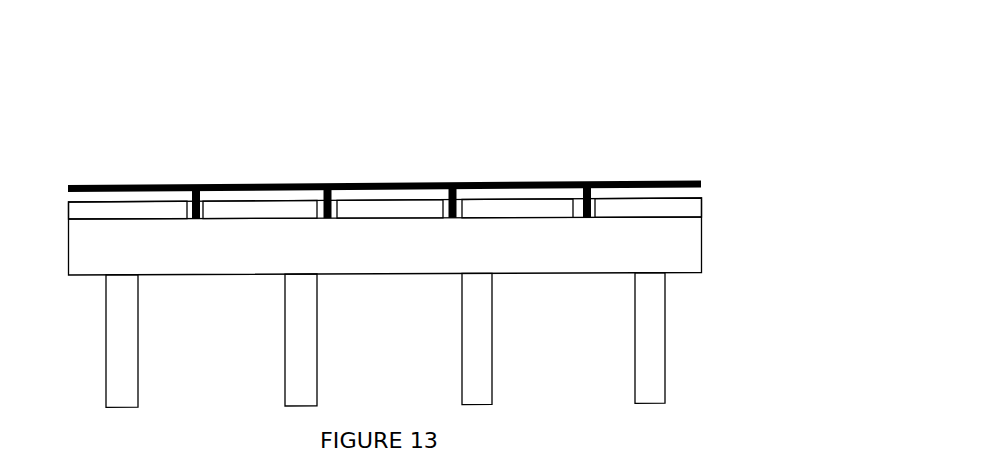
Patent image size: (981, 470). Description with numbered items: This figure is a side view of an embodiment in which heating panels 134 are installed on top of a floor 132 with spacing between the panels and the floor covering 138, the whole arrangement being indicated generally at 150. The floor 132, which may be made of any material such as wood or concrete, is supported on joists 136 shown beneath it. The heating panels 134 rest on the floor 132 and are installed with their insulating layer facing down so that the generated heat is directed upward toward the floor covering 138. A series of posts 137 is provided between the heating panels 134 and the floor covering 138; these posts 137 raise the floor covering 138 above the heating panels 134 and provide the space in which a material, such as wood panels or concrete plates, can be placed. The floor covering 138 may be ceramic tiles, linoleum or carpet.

The sensor assembly 150 is at (693, 115).
The floor 132 is at (145, 258).
The heating panels 134 is at (223, 208).
The joists 136 is at (640, 288).
The posts 137 is at (593, 197).
The floor covering 138 is at (447, 183).